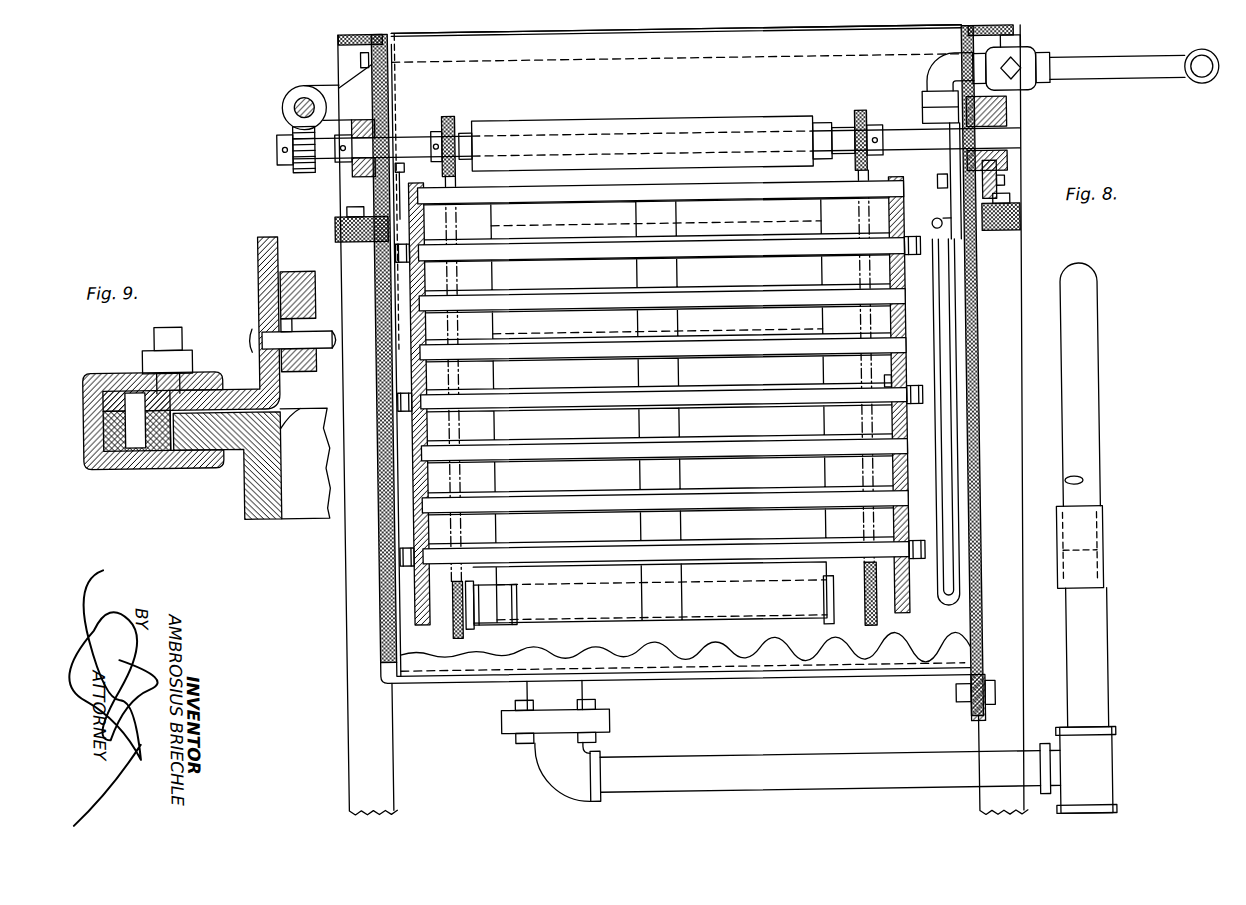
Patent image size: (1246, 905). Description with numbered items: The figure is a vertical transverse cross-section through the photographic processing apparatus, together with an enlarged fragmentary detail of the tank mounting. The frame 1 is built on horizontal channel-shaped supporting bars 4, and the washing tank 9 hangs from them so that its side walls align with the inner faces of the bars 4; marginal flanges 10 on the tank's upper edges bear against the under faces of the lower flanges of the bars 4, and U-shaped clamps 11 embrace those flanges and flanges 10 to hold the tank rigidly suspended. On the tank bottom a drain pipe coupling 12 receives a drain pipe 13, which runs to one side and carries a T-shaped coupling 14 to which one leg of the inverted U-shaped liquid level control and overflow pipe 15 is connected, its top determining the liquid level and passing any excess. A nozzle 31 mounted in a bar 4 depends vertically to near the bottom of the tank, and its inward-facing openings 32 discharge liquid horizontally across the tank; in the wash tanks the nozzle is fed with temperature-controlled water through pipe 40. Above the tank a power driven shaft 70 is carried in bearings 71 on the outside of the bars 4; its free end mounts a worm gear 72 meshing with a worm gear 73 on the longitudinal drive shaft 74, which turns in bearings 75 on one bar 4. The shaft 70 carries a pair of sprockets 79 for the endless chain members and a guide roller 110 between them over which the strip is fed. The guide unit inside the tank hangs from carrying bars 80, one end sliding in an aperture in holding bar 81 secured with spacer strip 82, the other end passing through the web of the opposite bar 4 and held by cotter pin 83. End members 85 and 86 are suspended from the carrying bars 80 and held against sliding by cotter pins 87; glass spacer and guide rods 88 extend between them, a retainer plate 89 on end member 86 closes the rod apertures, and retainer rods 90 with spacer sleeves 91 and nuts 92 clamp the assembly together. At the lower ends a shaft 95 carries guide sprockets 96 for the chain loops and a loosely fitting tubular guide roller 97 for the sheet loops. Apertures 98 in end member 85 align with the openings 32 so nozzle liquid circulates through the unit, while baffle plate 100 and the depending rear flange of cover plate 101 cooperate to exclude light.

In FIG. 8, the frame 1 is at (385, 732).
In FIG. 8, the supporting bar 4 is at (364, 44).
In FIG. 9, the supporting bar 4 is at (260, 306).
In FIG. 8, the washing tank 9 is at (701, 679).
In FIG. 9, the washing tank 9 is at (243, 512).
In FIG. 9, the marginal flange 10 is at (228, 458).
In FIG. 8, the U-shaped clamp 11 is at (340, 218).
In FIG. 9, the U-shaped clamp 11 is at (152, 468).
In FIG. 8, the drain pipe coupling 12 is at (555, 711).
In FIG. 8, the drain pipe 13 is at (793, 768).
In FIG. 8, the T-shaped coupling 14 is at (1083, 770).
In FIG. 8, the liquid level control and overflow pipe 15 is at (1081, 495).
In FIG. 8, the nozzle 31 is at (928, 353).
In FIG. 8, the opening 32 is at (934, 281).
In FIG. 8, the pipe 40 is at (1207, 56).
In FIG. 8, the power driven shaft 70 is at (426, 132).
In FIG. 8, the bearing 71 is at (354, 168).
In FIG. 8, the worm gear 72 is at (302, 168).
In FIG. 8, the worm gear 73 is at (308, 80).
In FIG. 8, the drive shaft 74 is at (297, 102).
In FIG. 8, the bearing 75 is at (338, 93).
In FIG. 8, the sprocket 79 is at (458, 124).
In FIG. 8, the carrying bar 80 is at (982, 186).
In FIG. 9, the carrying bar 80 is at (333, 288).
In FIG. 8, the holding bar 81 is at (404, 184).
In FIG. 9, the holding bar 81 is at (314, 273).
In FIG. 9, the spacer strip 82 is at (284, 374).
In FIG. 8, the cotter pin 83 is at (942, 184).
In FIG. 8, the end member 85 is at (900, 174).
In FIG. 8, the end member 86 is at (426, 321).
In FIG. 8, the cotter pin 87 is at (425, 193).
In FIG. 8, the glass spacer and guide rod 88 is at (664, 372).
In FIG. 8, the retainer plate 89 is at (420, 501).
In FIG. 8, the retainer rod 90 is at (886, 389).
In FIG. 8, the spacer sleeve 91 is at (664, 397).
In FIG. 8, the nut 92 is at (445, 255).
In FIG. 8, the shaft 95 is at (508, 600).
In FIG. 8, the guide sprocket 96 is at (448, 631).
In FIG. 8, the guide roller 97 is at (484, 628).
In FIG. 8, the aperture 98 is at (886, 284).
In FIG. 8, the baffle plate 100 is at (681, 369).
In FIG. 8, the cover plate 101 is at (666, 30).
In FIG. 8, the guide roller 110 is at (654, 124).